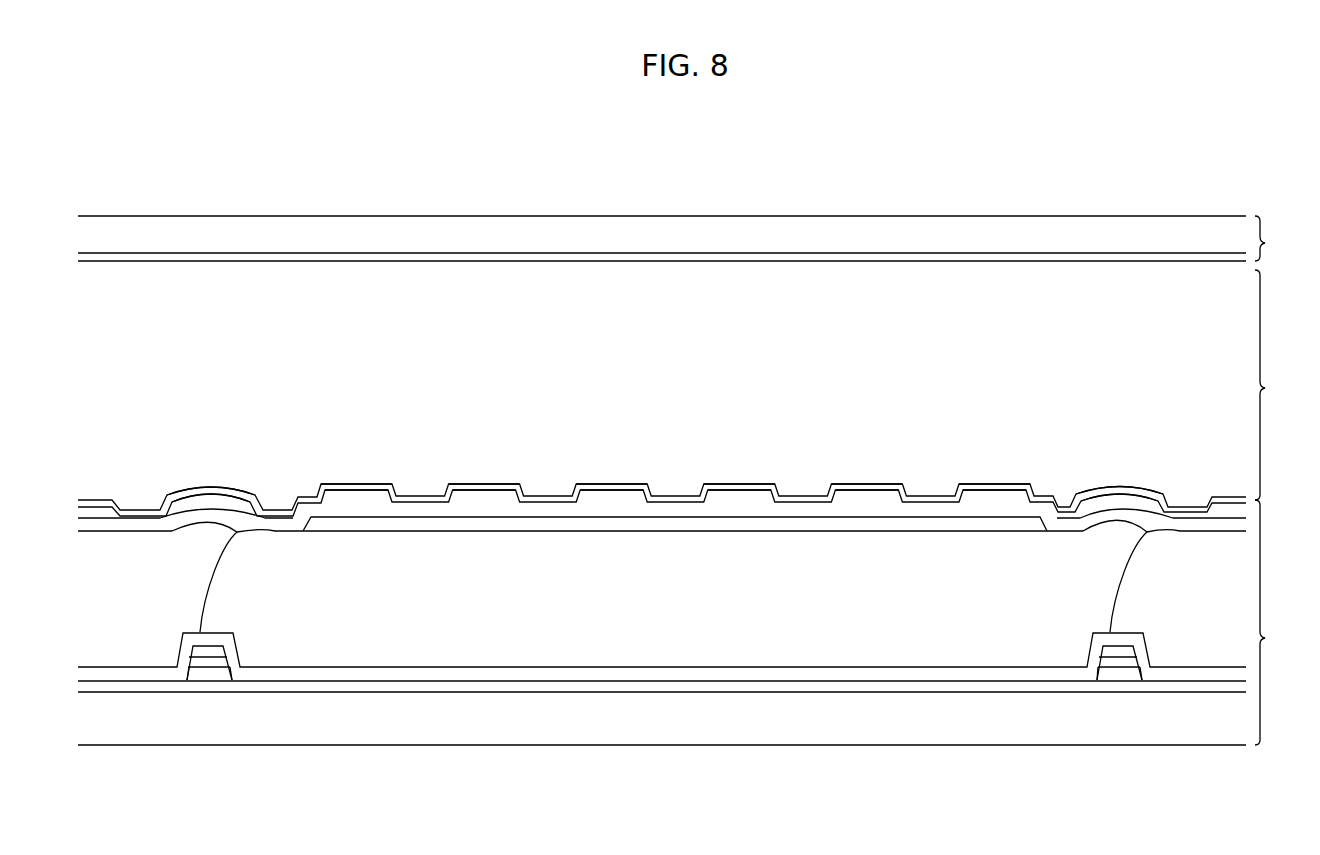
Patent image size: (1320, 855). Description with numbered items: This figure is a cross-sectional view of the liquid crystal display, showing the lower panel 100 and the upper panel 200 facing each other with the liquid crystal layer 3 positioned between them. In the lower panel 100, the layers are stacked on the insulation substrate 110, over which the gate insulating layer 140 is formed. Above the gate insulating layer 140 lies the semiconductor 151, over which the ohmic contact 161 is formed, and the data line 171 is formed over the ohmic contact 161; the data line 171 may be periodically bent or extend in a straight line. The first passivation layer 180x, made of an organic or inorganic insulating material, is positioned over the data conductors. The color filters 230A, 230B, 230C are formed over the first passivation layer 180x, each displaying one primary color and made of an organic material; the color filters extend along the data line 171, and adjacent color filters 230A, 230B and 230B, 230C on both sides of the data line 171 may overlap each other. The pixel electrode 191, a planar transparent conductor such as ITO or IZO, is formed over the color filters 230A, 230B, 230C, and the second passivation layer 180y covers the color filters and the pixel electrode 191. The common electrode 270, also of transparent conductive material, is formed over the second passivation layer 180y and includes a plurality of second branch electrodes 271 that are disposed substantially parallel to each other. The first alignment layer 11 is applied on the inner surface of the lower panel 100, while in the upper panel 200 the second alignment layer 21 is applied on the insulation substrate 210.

The insulation substrate 210 is at (458, 240).
The second alignment layer 21 is at (630, 268).
The upper panel 200 is at (1283, 238).
The liquid crystal layer 3 is at (1269, 385).
The lower panel 100 is at (1283, 622).
The first alignment layer 11 is at (990, 488).
The second branch electrodes 271 is at (97, 513).
The common electrode 270 is at (207, 497).
The second passivation layer 180y is at (805, 513).
The pixel electrode 191 is at (618, 527).
The color filter 230A is at (113, 627).
The color filter 230B is at (450, 627).
The color filter 230C is at (1195, 627).
The first passivation layer 180x is at (828, 677).
The data line 171 is at (198, 653).
The ohmic contact 161 is at (210, 665).
The semiconductor 151 is at (227, 674).
The gate insulating layer 140 is at (707, 690).
The insulation substrate 110 is at (593, 738).